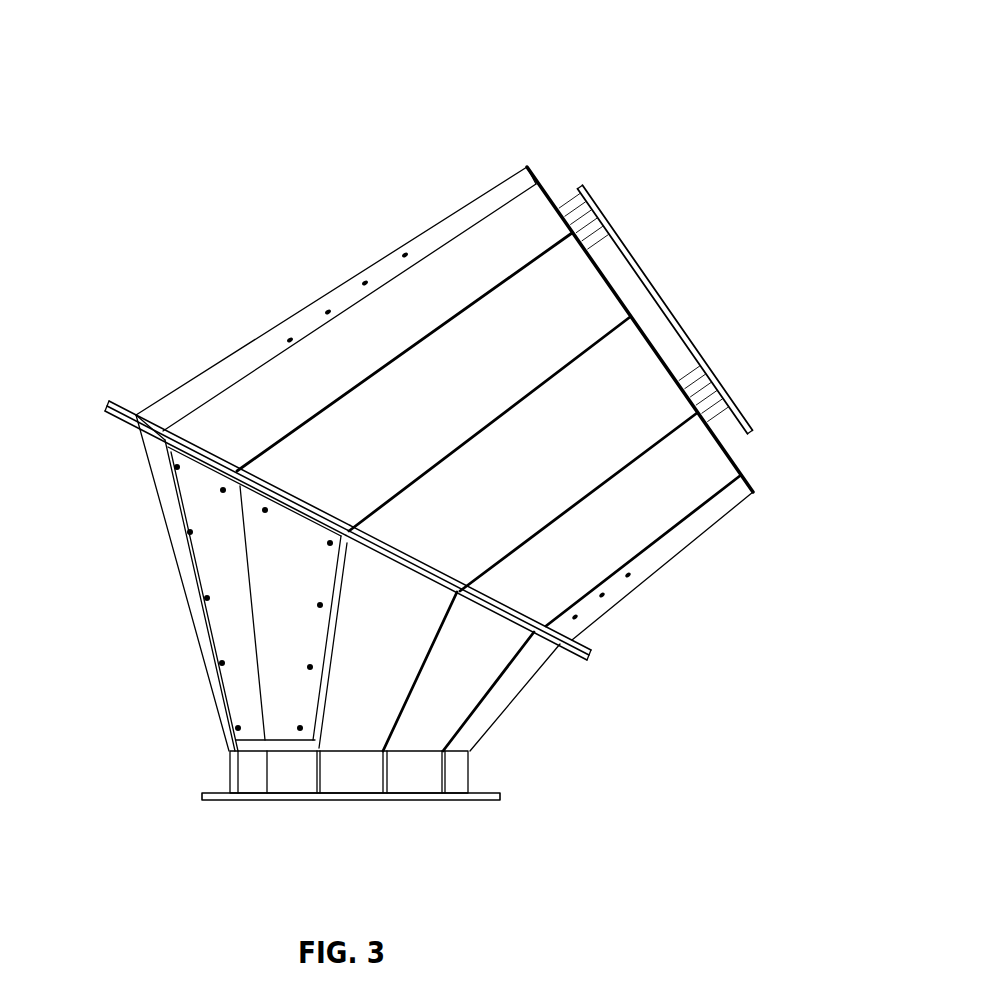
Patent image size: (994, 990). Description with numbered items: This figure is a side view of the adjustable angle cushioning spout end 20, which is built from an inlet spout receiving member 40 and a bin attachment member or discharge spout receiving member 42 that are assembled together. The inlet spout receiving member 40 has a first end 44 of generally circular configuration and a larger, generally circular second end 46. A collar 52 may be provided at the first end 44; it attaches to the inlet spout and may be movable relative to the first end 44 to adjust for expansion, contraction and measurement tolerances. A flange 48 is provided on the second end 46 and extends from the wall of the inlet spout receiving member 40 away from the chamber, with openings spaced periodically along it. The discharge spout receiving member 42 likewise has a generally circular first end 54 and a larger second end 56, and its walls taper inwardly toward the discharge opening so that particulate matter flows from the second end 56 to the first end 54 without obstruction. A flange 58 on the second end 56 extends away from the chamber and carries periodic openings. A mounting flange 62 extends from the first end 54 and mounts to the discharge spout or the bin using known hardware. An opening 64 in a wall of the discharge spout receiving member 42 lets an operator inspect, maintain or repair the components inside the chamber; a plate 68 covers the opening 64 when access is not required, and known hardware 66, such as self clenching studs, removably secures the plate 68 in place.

The spout end 20 is at (454, 103).
The inlet spout receiving member 40 is at (462, 405).
The discharge spout receiving member 42 is at (397, 657).
The first end 44 is at (742, 475).
The second end 46 is at (150, 440).
The flange 48 is at (590, 647).
The collar 52 is at (653, 290).
The first end 54 is at (247, 795).
The second end 56 is at (183, 432).
The flange 58 is at (578, 660).
The mounting flange 62 is at (457, 798).
The opening 64 is at (222, 684).
The hardware 66 is at (207, 597).
The plate 68 is at (230, 628).